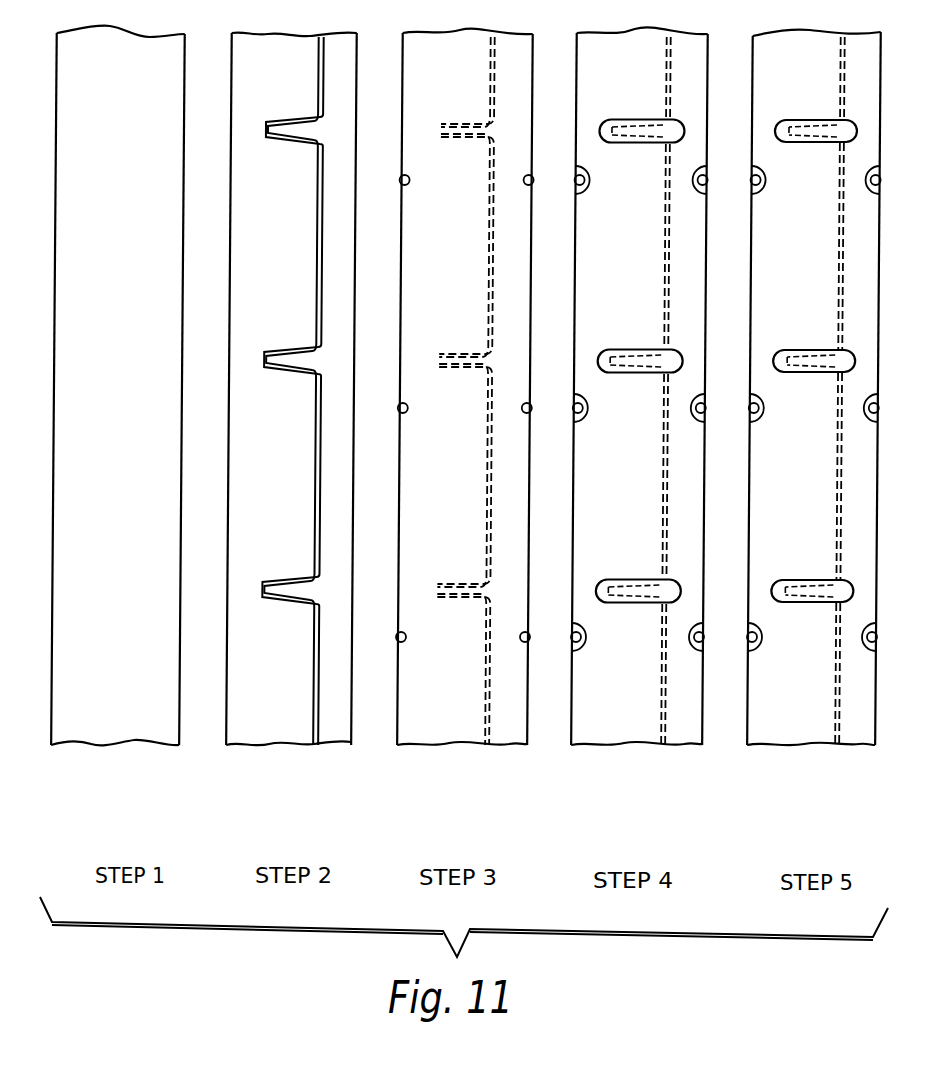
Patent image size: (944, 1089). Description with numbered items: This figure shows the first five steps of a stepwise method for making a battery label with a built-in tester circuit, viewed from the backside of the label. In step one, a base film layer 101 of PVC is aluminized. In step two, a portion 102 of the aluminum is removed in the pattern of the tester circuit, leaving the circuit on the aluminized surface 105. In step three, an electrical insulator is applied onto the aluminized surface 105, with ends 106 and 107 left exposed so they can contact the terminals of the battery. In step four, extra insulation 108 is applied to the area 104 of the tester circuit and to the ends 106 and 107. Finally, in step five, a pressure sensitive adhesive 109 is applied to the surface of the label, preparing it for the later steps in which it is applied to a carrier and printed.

The base film layer 101 is at (102, 745).
The portion of the aluminum 102 is at (314, 710).
The area of the tester circuit 104 is at (300, 132).
The aluminized surface 105 is at (168, 702).
The end 106 is at (398, 641).
The end 107 is at (302, 357).
The extra insulation 108 is at (635, 604).
The pressure sensitive adhesive 109 is at (800, 727).